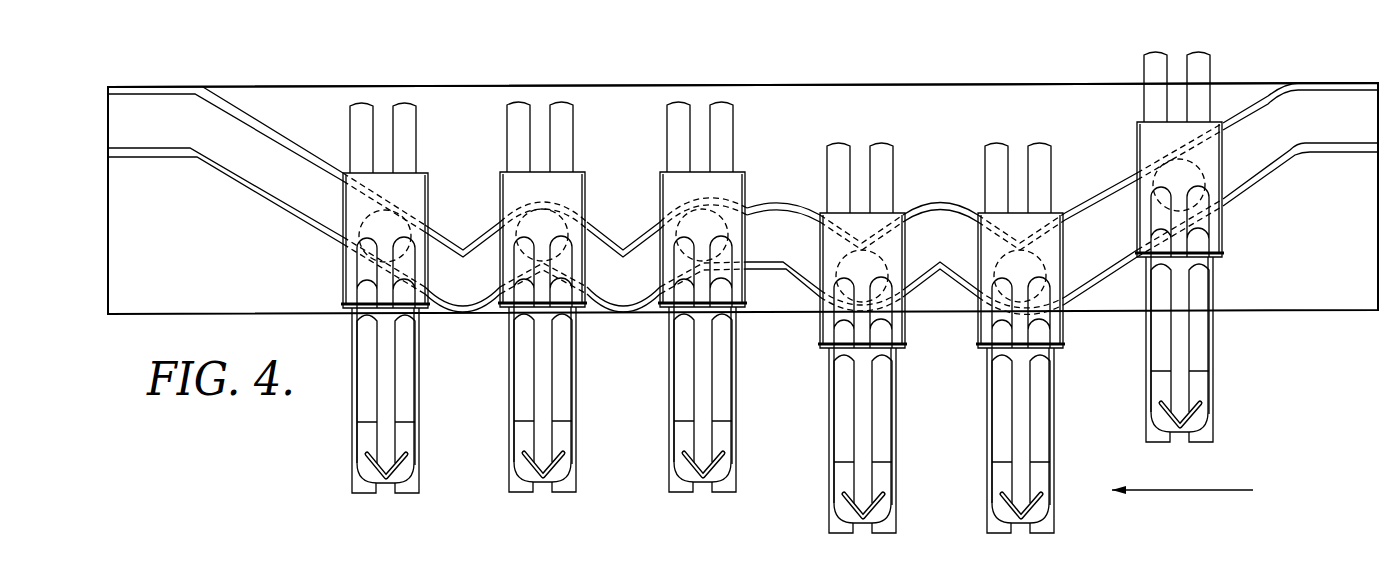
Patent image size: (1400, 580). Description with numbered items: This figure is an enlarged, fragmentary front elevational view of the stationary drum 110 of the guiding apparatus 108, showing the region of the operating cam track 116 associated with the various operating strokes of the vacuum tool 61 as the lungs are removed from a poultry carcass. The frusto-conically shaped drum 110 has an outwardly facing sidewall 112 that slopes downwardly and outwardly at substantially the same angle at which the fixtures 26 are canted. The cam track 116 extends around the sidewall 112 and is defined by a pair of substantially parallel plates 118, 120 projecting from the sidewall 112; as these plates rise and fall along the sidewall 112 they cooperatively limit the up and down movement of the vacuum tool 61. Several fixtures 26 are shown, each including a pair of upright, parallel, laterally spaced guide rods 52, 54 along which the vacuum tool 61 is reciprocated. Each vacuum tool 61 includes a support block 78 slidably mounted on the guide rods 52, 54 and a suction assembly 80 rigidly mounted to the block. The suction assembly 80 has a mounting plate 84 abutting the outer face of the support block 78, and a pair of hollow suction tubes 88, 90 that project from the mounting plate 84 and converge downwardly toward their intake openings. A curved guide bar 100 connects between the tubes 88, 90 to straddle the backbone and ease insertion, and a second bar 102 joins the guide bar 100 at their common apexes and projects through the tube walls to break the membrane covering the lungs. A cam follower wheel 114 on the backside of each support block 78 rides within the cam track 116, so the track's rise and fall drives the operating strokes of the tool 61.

The fixture 26 is at (338, 431).
The guide rod 52 is at (367, 494).
The guide rod 54 is at (405, 496).
The vacuum tool 61 is at (340, 293).
The support block 78 is at (428, 262).
The suction assembly 80 is at (1218, 266).
The mounting plate 84 is at (407, 182).
The suction tube 88 is at (368, 396).
The suction tube 90 is at (412, 373).
The guide bar 100 is at (406, 462).
The second bar 102 is at (362, 481).
The guiding apparatus 108 is at (1322, 76).
The drum 110 is at (830, 96).
The sidewall 112 is at (835, 98).
The cam follower wheel 114 is at (358, 235).
The operating cam track 116 is at (216, 187).
The plate 118 is at (252, 117).
The plate 120 is at (1273, 163).